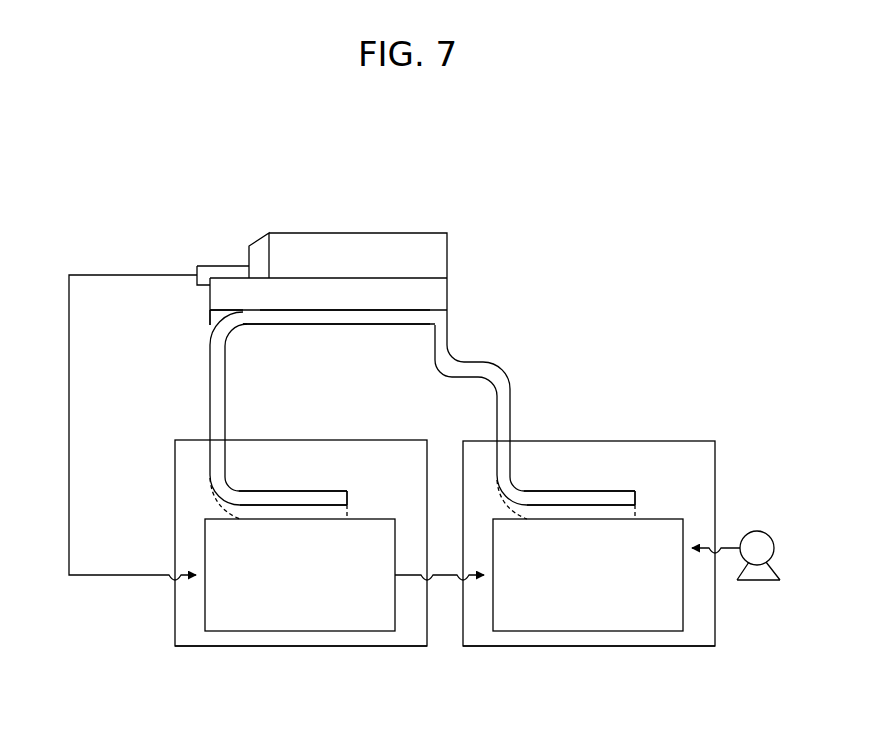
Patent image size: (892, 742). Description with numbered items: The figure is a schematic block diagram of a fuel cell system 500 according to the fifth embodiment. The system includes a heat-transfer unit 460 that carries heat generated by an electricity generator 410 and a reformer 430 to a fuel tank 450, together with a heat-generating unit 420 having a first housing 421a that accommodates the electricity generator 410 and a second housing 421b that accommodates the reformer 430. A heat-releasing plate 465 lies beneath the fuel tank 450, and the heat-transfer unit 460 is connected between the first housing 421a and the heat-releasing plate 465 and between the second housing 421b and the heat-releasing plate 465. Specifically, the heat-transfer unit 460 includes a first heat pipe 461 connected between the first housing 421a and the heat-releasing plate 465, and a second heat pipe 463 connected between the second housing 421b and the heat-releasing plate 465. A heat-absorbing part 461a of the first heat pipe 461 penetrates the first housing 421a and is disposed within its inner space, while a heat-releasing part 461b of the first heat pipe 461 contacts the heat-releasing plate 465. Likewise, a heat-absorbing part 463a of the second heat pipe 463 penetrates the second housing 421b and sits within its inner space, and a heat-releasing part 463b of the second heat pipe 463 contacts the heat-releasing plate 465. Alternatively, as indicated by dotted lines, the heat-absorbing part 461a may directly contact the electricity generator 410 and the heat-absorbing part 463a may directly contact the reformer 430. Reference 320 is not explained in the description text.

The fuel cell system 500 is at (341, 146).
The fuel tank 450 is at (385, 232).
The heat-releasing plate 465 is at (448, 290).
The heat-transfer unit 460 is at (459, 313).
The first heat pipe 461 is at (524, 390).
The heat-absorbing part of the first heat pipe 461a is at (600, 488).
The heat-releasing part of the first heat pipe 461b is at (210, 320).
The second heat pipe 463 is at (200, 377).
The heat-absorbing part of the second heat pipe 463a is at (300, 488).
The heat-releasing part of the second heat pipe 463b is at (377, 327).
The first tank 320 is at (440, 431).
The reformer 430 is at (342, 631).
The second housing 421b is at (240, 647).
The heat-generating unit 420 is at (727, 432).
The electricity generator 410 is at (608, 631).
The first housing 421a is at (673, 647).